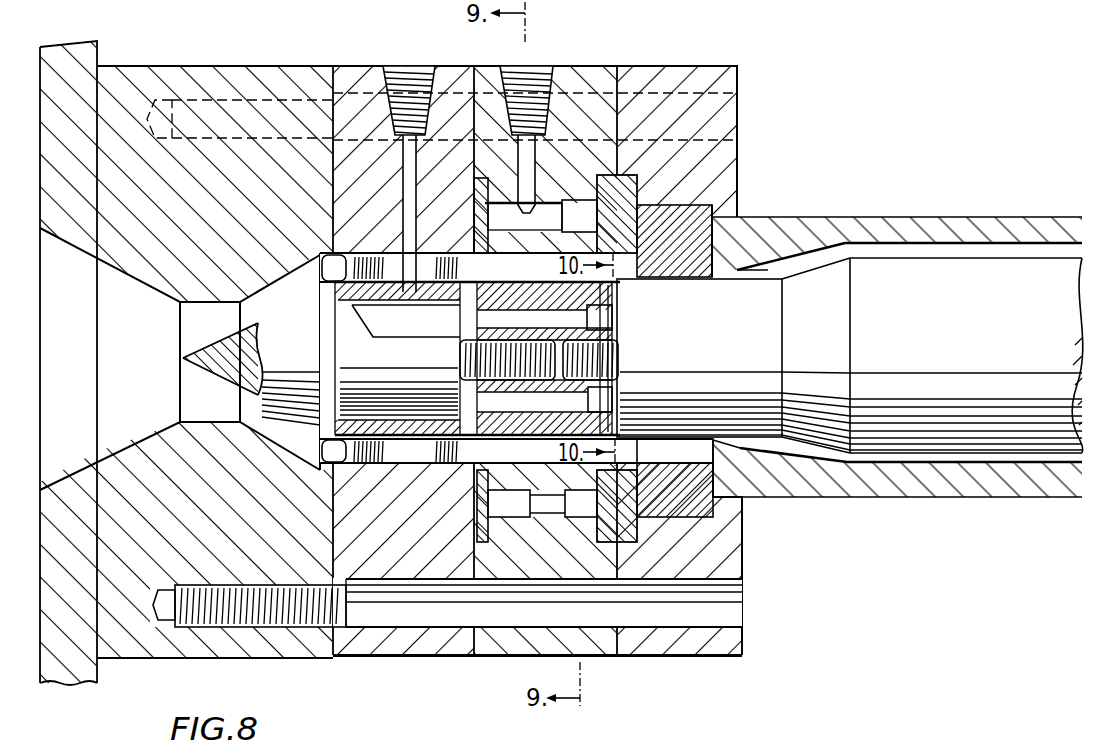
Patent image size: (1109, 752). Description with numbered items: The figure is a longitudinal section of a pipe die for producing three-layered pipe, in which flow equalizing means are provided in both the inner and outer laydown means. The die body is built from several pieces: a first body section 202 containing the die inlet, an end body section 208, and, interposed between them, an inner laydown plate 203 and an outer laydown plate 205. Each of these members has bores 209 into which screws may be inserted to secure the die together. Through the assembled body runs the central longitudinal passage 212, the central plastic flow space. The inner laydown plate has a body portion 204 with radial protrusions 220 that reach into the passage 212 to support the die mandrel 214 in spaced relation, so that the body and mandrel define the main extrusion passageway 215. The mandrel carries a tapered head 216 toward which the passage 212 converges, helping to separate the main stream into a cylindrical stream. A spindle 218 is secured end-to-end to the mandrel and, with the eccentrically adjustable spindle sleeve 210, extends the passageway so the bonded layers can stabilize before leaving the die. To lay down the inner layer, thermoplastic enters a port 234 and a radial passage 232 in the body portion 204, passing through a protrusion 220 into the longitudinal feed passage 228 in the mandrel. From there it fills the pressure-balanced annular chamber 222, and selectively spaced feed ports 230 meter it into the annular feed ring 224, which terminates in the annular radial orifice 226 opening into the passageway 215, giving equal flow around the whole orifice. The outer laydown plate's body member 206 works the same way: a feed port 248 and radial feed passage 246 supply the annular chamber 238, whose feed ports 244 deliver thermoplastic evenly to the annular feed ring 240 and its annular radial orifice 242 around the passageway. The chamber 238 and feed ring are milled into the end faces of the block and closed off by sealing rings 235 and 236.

The first body section 202 is at (232, 535).
The inner laydown plate 203 is at (420, 661).
The body portion 204 is at (429, 555).
The outer laydown plate 205 is at (602, 661).
The body member 206 is at (569, 561).
The end body section 208 is at (696, 561).
The bores 209 is at (739, 95).
The spindle sleeve 210 is at (832, 478).
The central longitudinal passage 212 is at (142, 369).
The die mandrel 214 is at (188, 383).
The main extrusion passageway 215 is at (688, 452).
The tapered head 216 is at (208, 363).
The spindle 218 is at (980, 336).
The radial protrusions 220 is at (392, 458).
The annular chamber 222 is at (465, 328).
The annular feed ring 224 is at (618, 315).
The annular radial orifice 226 is at (617, 295).
The longitudinal feed passage 228 is at (395, 323).
The feed ports 230 is at (617, 327).
The radial passage 232 is at (403, 181).
The port 234 is at (418, 67).
The sealing ring 235 is at (476, 209).
The sealing ring 236 is at (640, 193).
The annular chamber 238 is at (497, 218).
The annular feed ring 240 is at (543, 252).
The annular radial orifice 242 is at (598, 230).
The feed ports 244 is at (568, 200).
The radial feed passage 246 is at (537, 155).
The feed port 248 is at (540, 67).